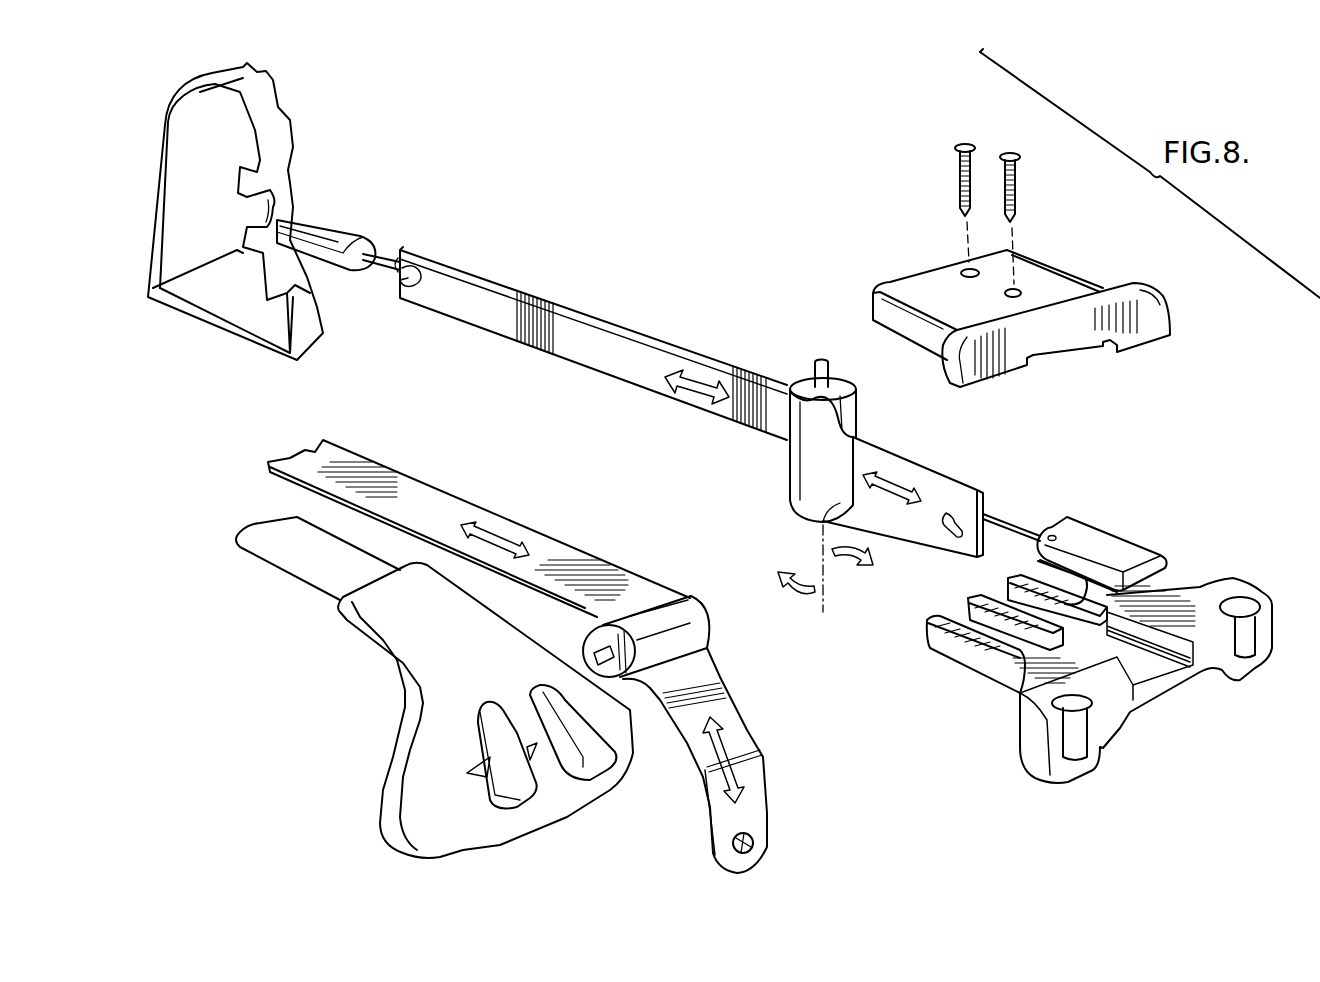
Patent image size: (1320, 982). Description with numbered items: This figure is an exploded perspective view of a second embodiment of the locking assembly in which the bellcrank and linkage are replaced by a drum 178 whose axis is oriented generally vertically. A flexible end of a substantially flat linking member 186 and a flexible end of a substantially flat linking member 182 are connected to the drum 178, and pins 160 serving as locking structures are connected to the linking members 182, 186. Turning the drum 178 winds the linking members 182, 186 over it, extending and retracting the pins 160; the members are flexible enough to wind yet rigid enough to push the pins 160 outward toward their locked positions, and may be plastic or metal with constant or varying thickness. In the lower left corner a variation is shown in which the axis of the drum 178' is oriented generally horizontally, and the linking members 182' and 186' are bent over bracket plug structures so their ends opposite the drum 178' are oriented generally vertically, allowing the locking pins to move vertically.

The pins 160 is at (347, 237).
The linking member 186 is at (591, 343).
The drum 178 is at (849, 486).
The linking member 182 is at (903, 510).
The linking member 186' is at (479, 528).
The drum 178' is at (672, 606).
The linking member 182' is at (731, 760).